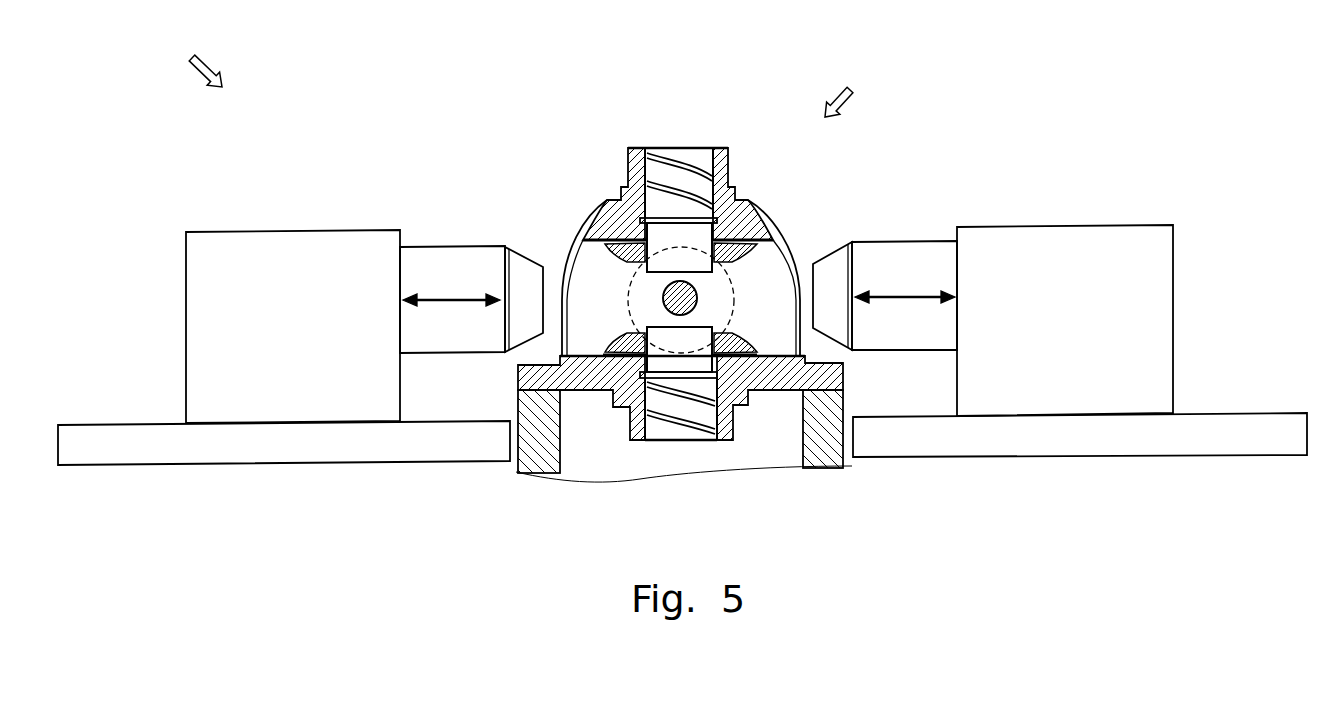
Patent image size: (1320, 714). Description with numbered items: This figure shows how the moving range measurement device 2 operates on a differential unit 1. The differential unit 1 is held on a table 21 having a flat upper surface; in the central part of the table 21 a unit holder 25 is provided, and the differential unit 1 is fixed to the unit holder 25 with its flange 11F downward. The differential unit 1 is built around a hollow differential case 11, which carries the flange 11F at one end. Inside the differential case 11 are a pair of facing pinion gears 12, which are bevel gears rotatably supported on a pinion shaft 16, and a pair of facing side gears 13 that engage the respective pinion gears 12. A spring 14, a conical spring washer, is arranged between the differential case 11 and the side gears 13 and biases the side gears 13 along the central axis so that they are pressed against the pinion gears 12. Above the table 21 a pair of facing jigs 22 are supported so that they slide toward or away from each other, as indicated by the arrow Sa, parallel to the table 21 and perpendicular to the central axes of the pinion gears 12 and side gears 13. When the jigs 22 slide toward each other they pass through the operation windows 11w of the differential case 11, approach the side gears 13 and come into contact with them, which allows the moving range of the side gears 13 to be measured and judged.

The differential unit 1 is at (846, 90).
The moving range measurement device 2 is at (198, 59).
The differential case 11 is at (613, 203).
The operation window 11w is at (548, 263).
The flange 11F is at (845, 360).
The pinion gear 12 is at (732, 302).
The side gear 13 is at (572, 262).
The spring 14 is at (748, 232).
The pinion shaft 16 is at (662, 298).
The table 21 is at (121, 425).
The jig 22 is at (452, 247).
The unit holder 25 is at (520, 410).
The sliding direction arrow Sa is at (679, 285).